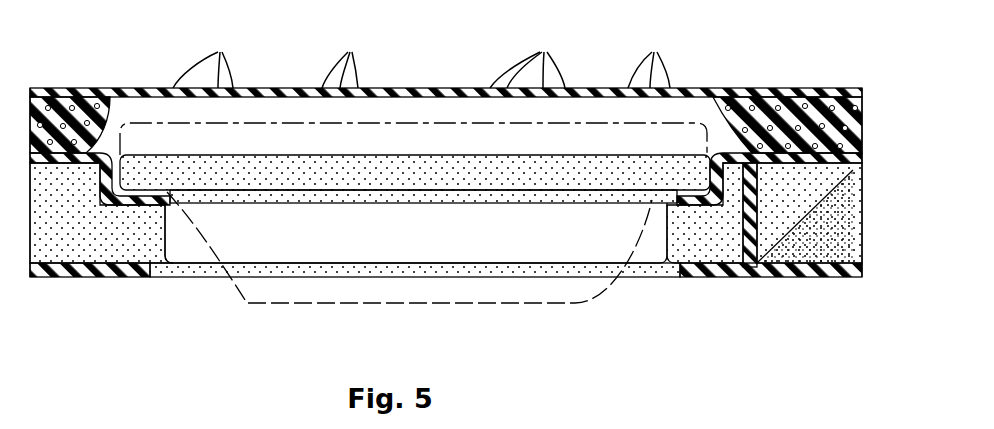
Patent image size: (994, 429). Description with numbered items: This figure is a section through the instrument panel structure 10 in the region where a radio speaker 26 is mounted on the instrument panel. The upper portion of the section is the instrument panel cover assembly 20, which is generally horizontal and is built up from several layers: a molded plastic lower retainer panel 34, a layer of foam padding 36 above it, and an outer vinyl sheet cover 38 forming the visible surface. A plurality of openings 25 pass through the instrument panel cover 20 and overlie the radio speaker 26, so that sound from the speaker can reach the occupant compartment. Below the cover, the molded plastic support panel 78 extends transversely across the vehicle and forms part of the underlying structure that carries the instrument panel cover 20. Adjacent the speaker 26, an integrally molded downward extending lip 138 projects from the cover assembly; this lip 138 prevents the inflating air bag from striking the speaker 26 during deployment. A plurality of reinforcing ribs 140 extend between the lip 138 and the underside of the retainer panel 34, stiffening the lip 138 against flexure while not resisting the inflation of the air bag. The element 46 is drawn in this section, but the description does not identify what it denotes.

The instrument panel structure 10 is at (131, 74).
The instrument panel cover assembly 20 is at (742, 82).
The openings 25 is at (424, 55).
The radio speaker 26 is at (450, 124).
The molded plastic lower retainer panel 34 is at (67, 160).
The layer of foam padding 36 is at (45, 100).
The vinyl sheet cover 38 is at (815, 97).
The cavity 46 is at (645, 243).
The molded plastic support panel 78 is at (112, 288).
The downward extending lip 138 is at (750, 228).
The reinforcing ribs 140 is at (790, 212).